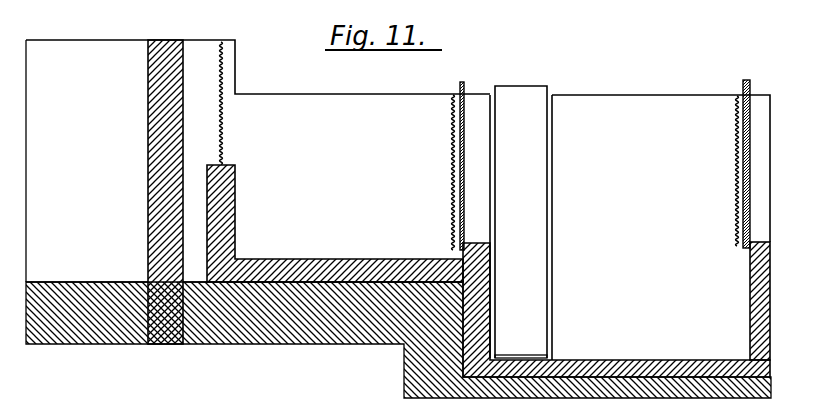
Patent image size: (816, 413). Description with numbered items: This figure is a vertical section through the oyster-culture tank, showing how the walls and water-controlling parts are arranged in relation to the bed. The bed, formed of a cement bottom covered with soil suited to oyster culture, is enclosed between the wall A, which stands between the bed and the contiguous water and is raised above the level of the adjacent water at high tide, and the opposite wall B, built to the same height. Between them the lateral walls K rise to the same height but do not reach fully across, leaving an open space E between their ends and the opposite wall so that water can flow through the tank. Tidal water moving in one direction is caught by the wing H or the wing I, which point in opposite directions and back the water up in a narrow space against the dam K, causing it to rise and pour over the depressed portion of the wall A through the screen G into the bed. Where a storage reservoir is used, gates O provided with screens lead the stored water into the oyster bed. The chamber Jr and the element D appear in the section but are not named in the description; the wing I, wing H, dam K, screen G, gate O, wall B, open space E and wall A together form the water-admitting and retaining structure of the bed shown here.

The wing I is at (78, 50).
The wing H is at (152, 78).
The dam K is at (232, 79).
The screen G is at (223, 147).
The chamber Jr is at (335, 217).
The gate O is at (458, 190).
The wall B is at (472, 253).
The open space E is at (533, 357).
The cover D is at (653, 101).
The wall A is at (752, 282).